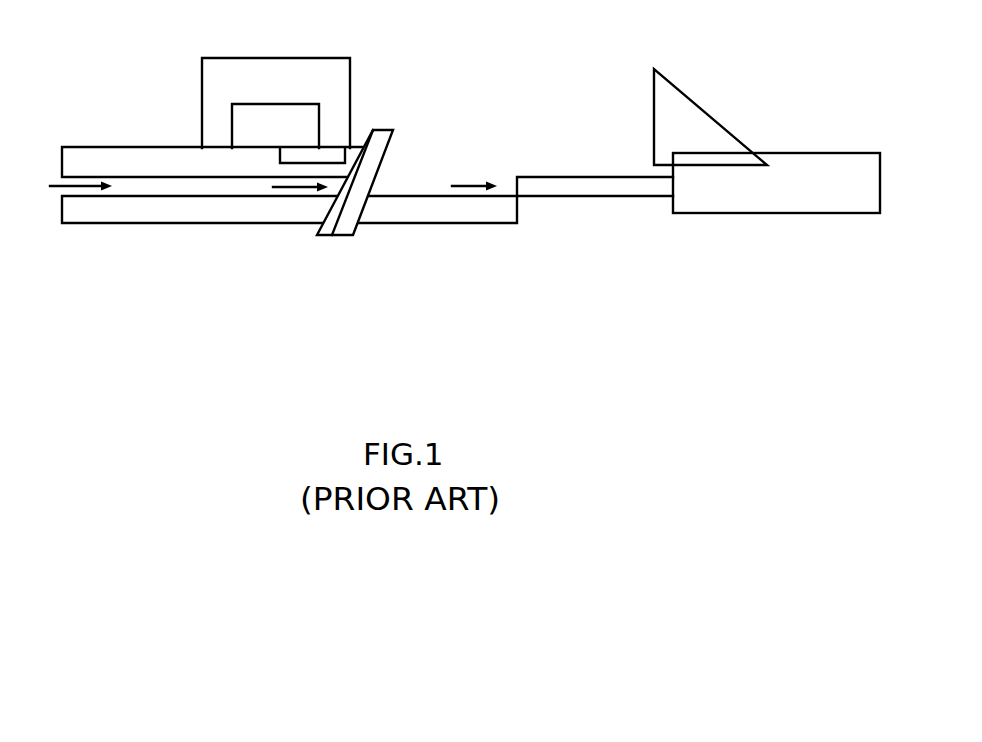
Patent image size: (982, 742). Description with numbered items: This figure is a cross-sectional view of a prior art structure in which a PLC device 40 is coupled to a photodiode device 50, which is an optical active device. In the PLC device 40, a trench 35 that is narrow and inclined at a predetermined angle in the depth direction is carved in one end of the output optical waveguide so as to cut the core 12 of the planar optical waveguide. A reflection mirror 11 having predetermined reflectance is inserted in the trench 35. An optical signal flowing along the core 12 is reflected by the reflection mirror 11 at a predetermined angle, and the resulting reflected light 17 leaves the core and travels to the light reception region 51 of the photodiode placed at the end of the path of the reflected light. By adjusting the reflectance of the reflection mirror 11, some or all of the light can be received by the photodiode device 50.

The reflection mirror 11 is at (377, 147).
The core of planar optical waveguide 12 is at (233, 188).
The reflected light 17 is at (332, 178).
The trench 35 is at (328, 224).
The PLC device 40 is at (416, 345).
The photodiode device 50 is at (213, 78).
The light reception region 51 is at (280, 102).